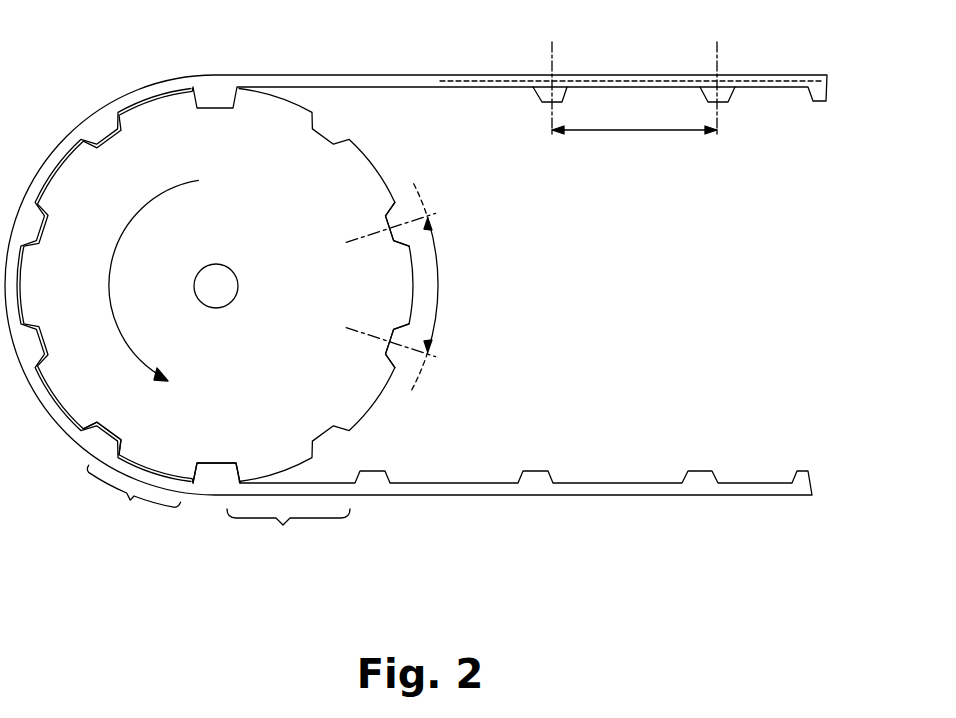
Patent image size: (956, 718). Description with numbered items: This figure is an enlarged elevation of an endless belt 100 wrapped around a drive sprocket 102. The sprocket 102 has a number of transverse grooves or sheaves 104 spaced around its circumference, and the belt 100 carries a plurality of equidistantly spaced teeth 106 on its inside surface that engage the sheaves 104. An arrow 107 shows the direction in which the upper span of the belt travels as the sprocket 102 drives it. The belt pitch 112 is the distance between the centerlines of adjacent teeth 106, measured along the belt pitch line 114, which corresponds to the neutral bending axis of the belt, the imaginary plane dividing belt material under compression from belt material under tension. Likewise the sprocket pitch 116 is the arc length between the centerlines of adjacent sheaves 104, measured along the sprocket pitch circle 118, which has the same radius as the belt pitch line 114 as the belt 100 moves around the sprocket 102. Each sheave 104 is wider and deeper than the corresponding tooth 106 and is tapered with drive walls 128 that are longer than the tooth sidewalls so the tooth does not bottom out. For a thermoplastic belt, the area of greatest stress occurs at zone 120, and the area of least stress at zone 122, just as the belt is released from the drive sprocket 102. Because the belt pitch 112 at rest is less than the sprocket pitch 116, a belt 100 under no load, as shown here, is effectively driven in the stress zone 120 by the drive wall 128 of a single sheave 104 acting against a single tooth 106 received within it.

The endless belt 100 is at (800, 74).
The drive sprocket 102 is at (249, 222).
The sheaves 104 is at (396, 239).
The teeth 106 is at (541, 96).
The arrow 107 is at (143, 210).
The belt pitch 112 is at (643, 133).
The belt pitch line 114 is at (628, 80).
The sprocket pitch 116 is at (440, 282).
The sprocket pitch circle 118 is at (427, 203).
The stress zone 120 is at (133, 501).
The zone of least stress 122 is at (288, 532).
The drive walls 128 is at (81, 422).